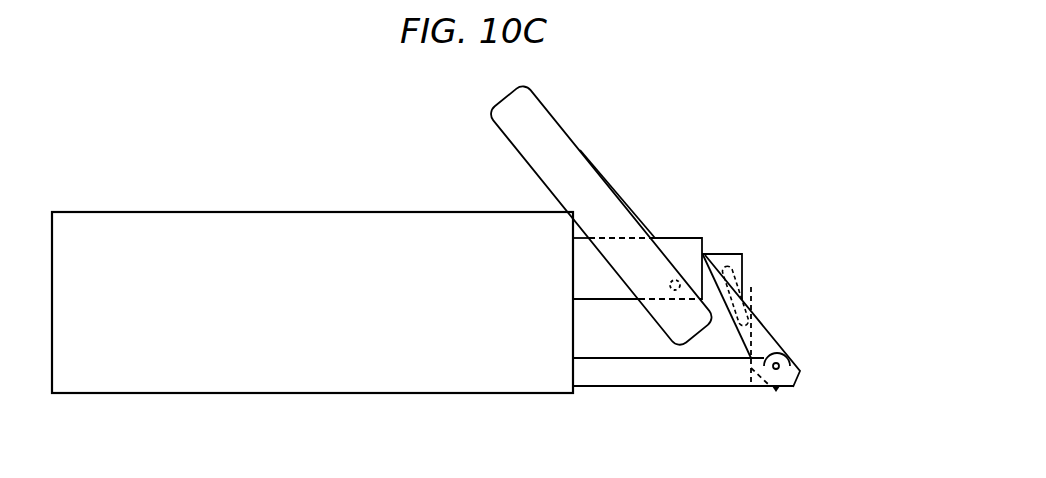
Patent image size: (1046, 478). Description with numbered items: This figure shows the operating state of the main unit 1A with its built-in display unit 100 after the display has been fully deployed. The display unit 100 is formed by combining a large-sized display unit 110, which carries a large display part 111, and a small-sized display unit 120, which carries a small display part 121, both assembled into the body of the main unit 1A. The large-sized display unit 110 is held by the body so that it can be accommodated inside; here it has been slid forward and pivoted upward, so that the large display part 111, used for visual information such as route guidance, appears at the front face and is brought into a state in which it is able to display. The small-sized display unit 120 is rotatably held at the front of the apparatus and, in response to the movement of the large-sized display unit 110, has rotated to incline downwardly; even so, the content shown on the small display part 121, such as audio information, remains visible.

The main unit with built-in display unit 1A is at (112, 202).
The display unit 100 is at (294, 202).
The large-sized display unit 110 is at (568, 112).
The large display part 111 is at (601, 178).
The small-sized display unit 120 is at (790, 334).
The small display part 121 is at (750, 303).